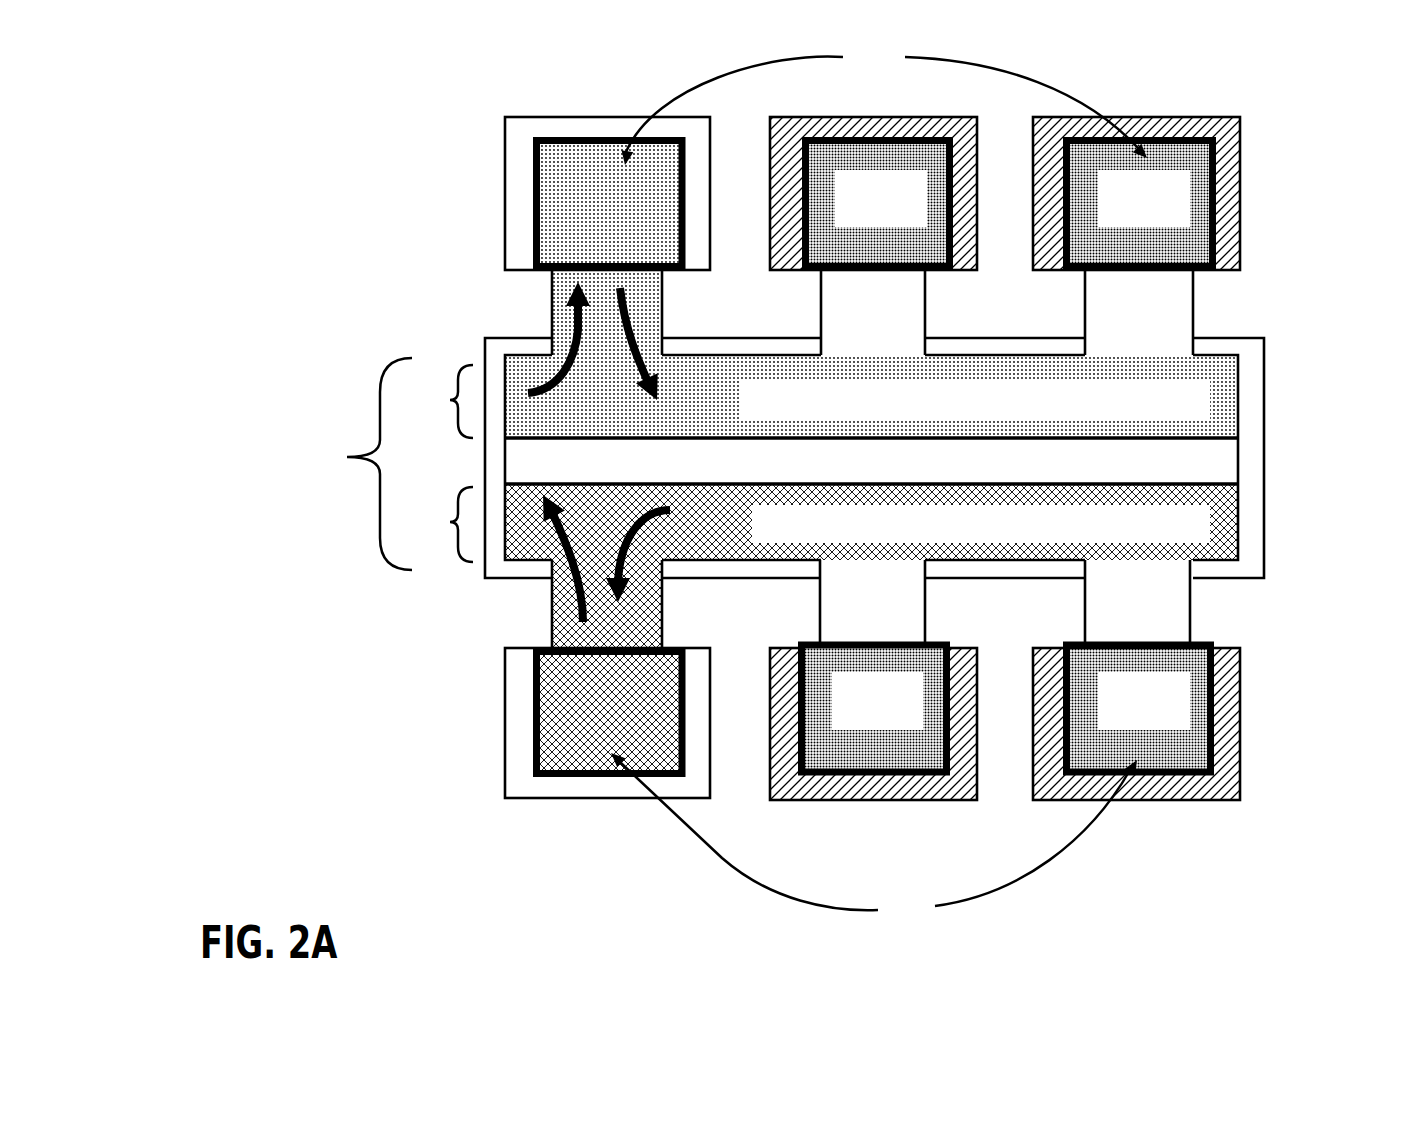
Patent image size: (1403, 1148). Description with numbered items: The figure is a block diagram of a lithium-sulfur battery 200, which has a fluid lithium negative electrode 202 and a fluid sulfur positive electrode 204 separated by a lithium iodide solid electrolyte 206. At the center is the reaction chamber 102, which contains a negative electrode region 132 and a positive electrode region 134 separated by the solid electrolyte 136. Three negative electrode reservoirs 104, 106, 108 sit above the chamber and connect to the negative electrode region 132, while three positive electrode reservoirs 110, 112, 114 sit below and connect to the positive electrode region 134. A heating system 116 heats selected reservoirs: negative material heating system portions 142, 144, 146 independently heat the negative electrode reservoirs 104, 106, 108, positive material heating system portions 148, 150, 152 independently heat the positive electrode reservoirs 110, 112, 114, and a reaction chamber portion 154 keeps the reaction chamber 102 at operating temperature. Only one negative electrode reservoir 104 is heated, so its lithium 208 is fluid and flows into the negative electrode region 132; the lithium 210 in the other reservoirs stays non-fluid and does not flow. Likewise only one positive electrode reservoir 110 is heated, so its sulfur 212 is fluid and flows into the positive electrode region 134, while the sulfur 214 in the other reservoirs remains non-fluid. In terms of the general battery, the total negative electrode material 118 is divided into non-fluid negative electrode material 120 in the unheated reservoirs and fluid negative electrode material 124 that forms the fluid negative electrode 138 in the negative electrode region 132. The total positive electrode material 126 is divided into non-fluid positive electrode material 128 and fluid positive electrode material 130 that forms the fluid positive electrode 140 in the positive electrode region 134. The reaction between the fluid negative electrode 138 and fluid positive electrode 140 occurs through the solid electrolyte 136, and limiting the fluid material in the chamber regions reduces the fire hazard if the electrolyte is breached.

The reaction chamber 102 is at (378, 390).
The negative electrode reservoir 104 is at (533, 228).
The negative electrode reservoir 106 is at (775, 253).
The negative electrode reservoir 108 is at (1195, 157).
The positive electrode reservoir 110 is at (535, 722).
The positive electrode reservoir 112 is at (798, 672).
The positive electrode reservoir 114 is at (1213, 712).
The heating system 116 is at (582, 115).
The negative electrode material 118 is at (873, 148).
The non-fluid negative electrode material 120 is at (903, 252).
The fluid negative electrode material 124 is at (566, 158).
The positive electrode material 126 is at (879, 775).
The non-fluid positive electrode material 128 is at (898, 772).
The fluid positive electrode material 130 is at (660, 756).
The negative electrode region 132 is at (547, 360).
The positive electrode region 134 is at (548, 554).
The solid electrolyte 136 is at (1238, 444).
The fluid negative electrode 138 is at (1238, 411).
The fluid positive electrode 140 is at (1238, 498).
The negative material heating system portion 142 is at (503, 193).
The negative material heating system portion 144 is at (945, 114).
The negative material heating system portion 146 is at (1240, 222).
The positive material heating system portion 148 is at (560, 800).
The positive material heating system portion 150 is at (800, 802).
The positive material heating system portion 152 is at (1237, 690).
The reaction chamber portion 154 is at (1264, 358).
The battery 200 is at (320, 704).
The fluid lithium negative electrode 202 is at (1238, 382).
The fluid sulfur positive electrode 204 is at (1240, 533).
The lithium iodide solid electrolyte 206 is at (1238, 467).
The lithium 208 is at (555, 175).
The lithium 210 is at (942, 242).
The sulfur 212 is at (566, 677).
The sulfur 214 is at (946, 768).